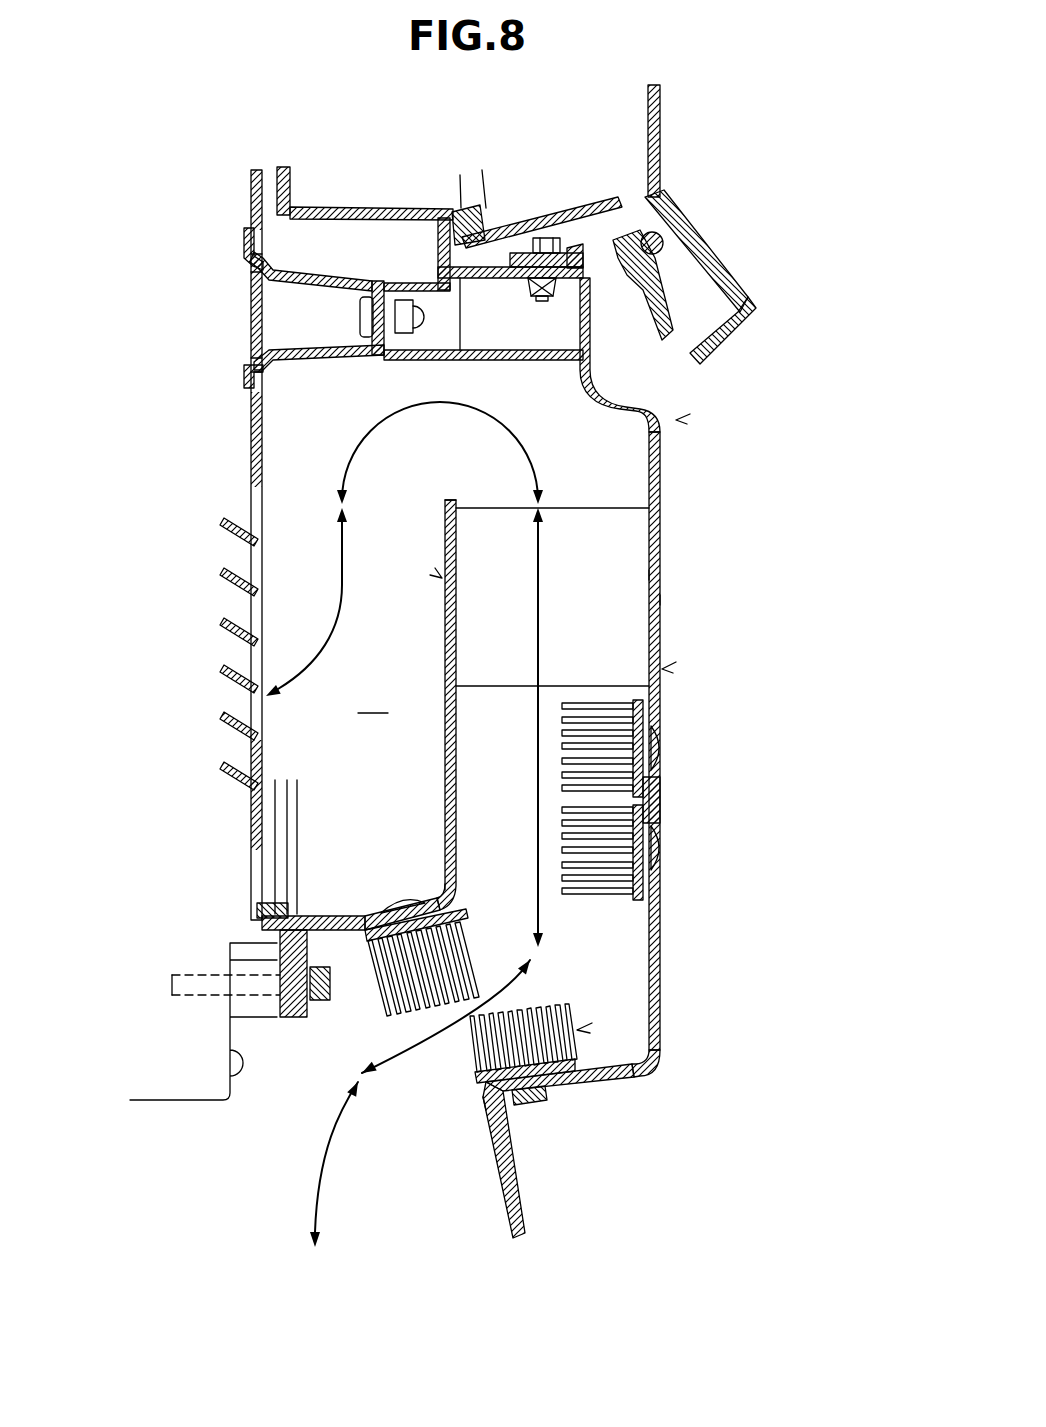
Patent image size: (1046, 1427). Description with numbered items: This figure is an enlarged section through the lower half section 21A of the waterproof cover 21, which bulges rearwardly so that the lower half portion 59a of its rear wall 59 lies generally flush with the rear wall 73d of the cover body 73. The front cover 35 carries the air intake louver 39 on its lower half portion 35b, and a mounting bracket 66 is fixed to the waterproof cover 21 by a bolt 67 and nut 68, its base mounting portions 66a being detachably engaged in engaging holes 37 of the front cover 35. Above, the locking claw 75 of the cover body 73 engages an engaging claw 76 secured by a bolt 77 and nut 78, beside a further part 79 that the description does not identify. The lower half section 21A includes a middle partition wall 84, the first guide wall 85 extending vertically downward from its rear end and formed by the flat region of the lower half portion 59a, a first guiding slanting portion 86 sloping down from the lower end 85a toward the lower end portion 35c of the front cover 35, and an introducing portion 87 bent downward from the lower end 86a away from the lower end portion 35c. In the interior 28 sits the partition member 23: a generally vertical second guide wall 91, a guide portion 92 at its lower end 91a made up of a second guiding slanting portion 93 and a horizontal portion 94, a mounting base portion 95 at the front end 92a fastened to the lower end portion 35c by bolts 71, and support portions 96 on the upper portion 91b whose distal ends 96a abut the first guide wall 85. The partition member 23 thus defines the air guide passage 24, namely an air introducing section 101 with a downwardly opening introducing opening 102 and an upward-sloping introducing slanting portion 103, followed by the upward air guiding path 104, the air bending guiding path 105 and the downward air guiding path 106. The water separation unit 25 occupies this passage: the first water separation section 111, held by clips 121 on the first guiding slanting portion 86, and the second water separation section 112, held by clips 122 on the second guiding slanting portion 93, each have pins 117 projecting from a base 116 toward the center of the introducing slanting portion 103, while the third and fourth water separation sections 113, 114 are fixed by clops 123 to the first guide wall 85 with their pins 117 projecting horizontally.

The waterproof cover 21 is at (676, 420).
The lower half section 21A is at (673, 501).
The partition member 23 is at (442, 578).
The air guide passage 24 is at (662, 669).
The water separation unit 25 is at (577, 1030).
The interior 28 is at (373, 700).
The front cover 35 is at (257, 424).
The lower half portion 35b is at (258, 562).
The lower end portion 35c is at (225, 1082).
The engaging holes 37 is at (252, 263).
The air intake louver 39 is at (185, 654).
The rear wall 59 is at (661, 540).
The lower half portion 59a is at (661, 600).
The mounting brackets 66 is at (302, 280).
The base mounting portions 66a is at (246, 240).
The bolts 67 is at (362, 322).
The nuts 68 is at (404, 336).
The bolts 71 is at (203, 975).
The cover body 73 is at (660, 102).
The rear wall 73d is at (655, 138).
The locking claw 75 is at (670, 308).
The engaging claw 76 is at (586, 215).
The bolt 77 is at (541, 238).
The nut 78 is at (530, 286).
The spring 79 is at (663, 243).
The middle partition wall 84 is at (398, 207).
The first guide wall 85 is at (662, 797).
The lower end 85a is at (661, 1046).
The first guiding slanting portion 86 is at (596, 1078).
The lower end 86a is at (487, 1120).
The introducing portion 87 is at (507, 1200).
The second guide wall 91 is at (444, 618).
The lower end 91a is at (458, 897).
The upper portion 91b is at (458, 553).
The guide portion 92 is at (351, 895).
The front end 92a is at (292, 912).
The second guiding slanting portion 93 is at (433, 902).
The horizontal portion 94 is at (313, 918).
The mounting base portion 95 is at (308, 1000).
The support portions 96 is at (565, 523).
The distal ends 96a is at (640, 575).
The air introducing section 101 is at (356, 1103).
The introducing opening 102 is at (255, 1095).
The introducing slanting portion 103 is at (355, 1068).
The upward air guiding path 104 is at (537, 731).
The air bending guiding path 105 is at (467, 410).
The downward air guiding path 106 is at (335, 634).
The first water separation section 111 is at (400, 1058).
The second water separation section 112 is at (372, 986).
The third water separation section 113 is at (641, 620).
The fourth water separation section 114 is at (549, 958).
The base 116 is at (483, 1090).
The pins 117 is at (453, 862).
The clips 121 is at (530, 1105).
The clips 122 is at (395, 902).
The clops 123 is at (663, 748).